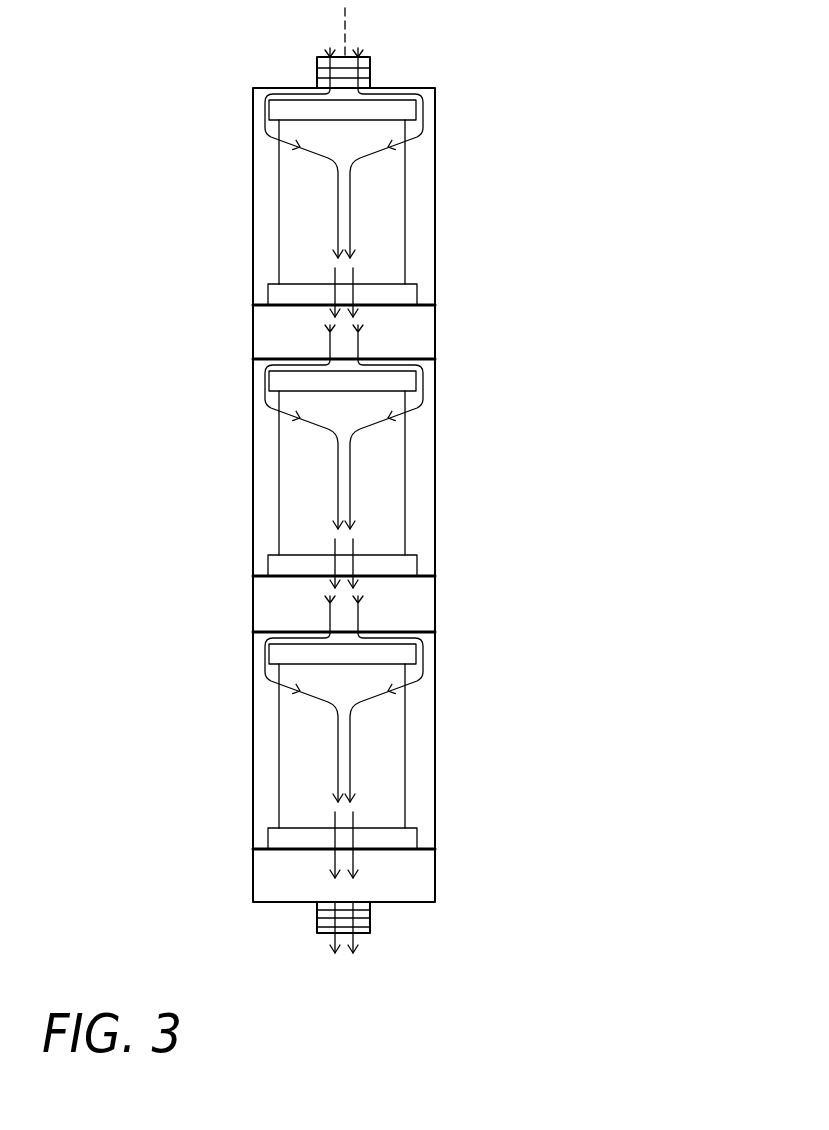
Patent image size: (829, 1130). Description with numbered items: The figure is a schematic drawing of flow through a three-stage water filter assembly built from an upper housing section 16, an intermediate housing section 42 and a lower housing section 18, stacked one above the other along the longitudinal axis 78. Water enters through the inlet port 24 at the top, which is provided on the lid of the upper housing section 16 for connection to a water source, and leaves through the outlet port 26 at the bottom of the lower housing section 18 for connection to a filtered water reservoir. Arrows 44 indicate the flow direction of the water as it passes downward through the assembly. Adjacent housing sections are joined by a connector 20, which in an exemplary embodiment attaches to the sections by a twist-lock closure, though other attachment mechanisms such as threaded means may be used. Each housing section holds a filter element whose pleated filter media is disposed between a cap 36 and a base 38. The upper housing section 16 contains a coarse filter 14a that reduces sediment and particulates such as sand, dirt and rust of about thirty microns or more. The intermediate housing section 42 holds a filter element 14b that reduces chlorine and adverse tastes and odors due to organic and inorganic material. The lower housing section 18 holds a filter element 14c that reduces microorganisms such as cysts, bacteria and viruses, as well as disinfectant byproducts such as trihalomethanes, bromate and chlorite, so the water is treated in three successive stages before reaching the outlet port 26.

The coarse filter 14a is at (392, 229).
The filter element 14b is at (392, 487).
The filter element 14c is at (392, 768).
The upper housing section 16 is at (292, 248).
The lower housing section 18 is at (282, 750).
The connector 20 is at (420, 333).
The inlet port 24 is at (372, 80).
The outlet port 26 is at (317, 915).
The cap 36 is at (268, 108).
The base 38 is at (268, 297).
The intermediate housing section 42 is at (292, 497).
The arrows 44 is at (357, 945).
The longitudinal axis 78 is at (355, 32).